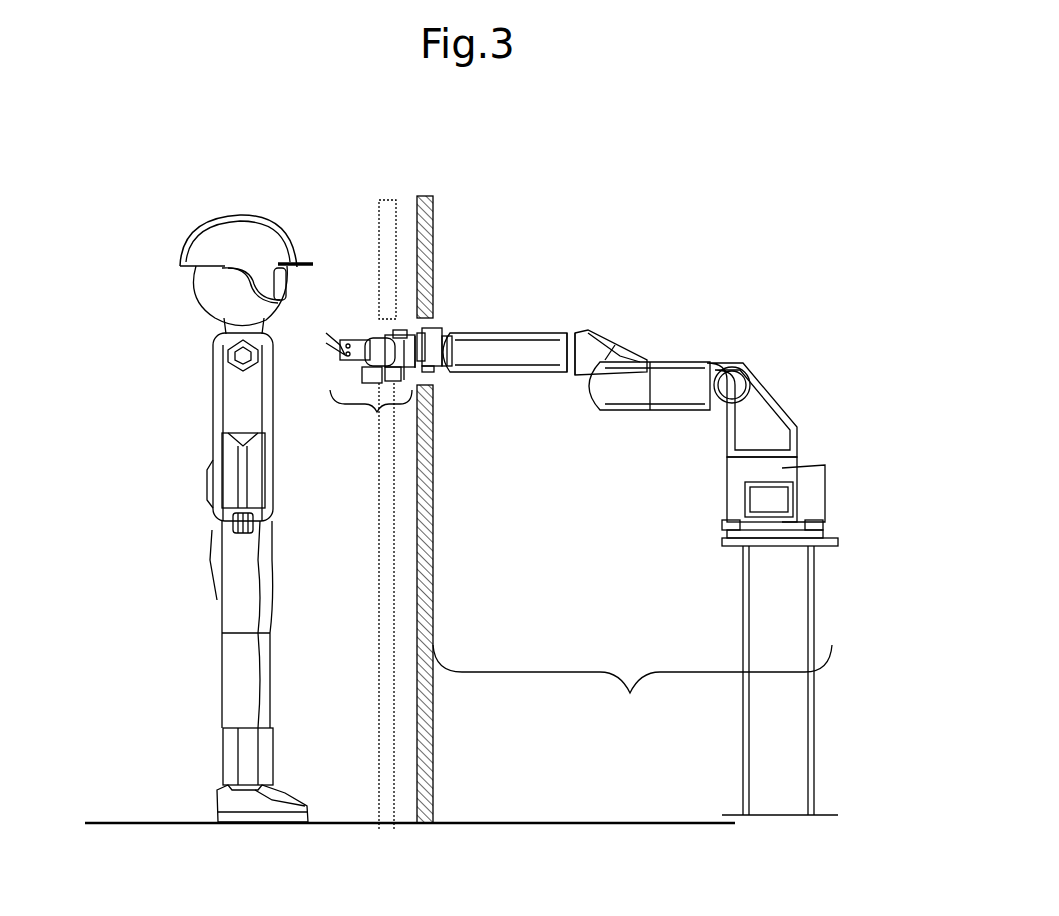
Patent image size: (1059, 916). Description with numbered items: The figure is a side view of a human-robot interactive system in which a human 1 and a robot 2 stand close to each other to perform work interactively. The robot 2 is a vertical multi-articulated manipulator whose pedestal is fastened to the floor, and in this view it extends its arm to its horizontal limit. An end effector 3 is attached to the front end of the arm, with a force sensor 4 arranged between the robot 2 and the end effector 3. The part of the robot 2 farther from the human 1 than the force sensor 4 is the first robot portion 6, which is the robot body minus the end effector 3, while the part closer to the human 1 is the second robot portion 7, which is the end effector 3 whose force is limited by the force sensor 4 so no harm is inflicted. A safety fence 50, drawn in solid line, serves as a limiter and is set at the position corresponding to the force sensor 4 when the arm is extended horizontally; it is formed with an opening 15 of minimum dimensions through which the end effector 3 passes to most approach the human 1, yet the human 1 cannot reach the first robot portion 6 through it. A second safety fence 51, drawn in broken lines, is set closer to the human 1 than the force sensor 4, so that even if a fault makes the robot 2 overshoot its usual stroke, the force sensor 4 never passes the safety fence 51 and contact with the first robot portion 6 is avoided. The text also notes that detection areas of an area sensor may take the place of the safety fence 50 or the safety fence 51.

The human 1 is at (247, 257).
The robot 2 is at (673, 378).
The end effector 3 is at (380, 346).
The force sensor 4 is at (455, 333).
The opening 15 is at (433, 322).
The safety fence 50 is at (432, 268).
The safety fence 51 is at (388, 235).
The first robot portion 6 is at (632, 687).
The second robot portion 7 is at (376, 412).